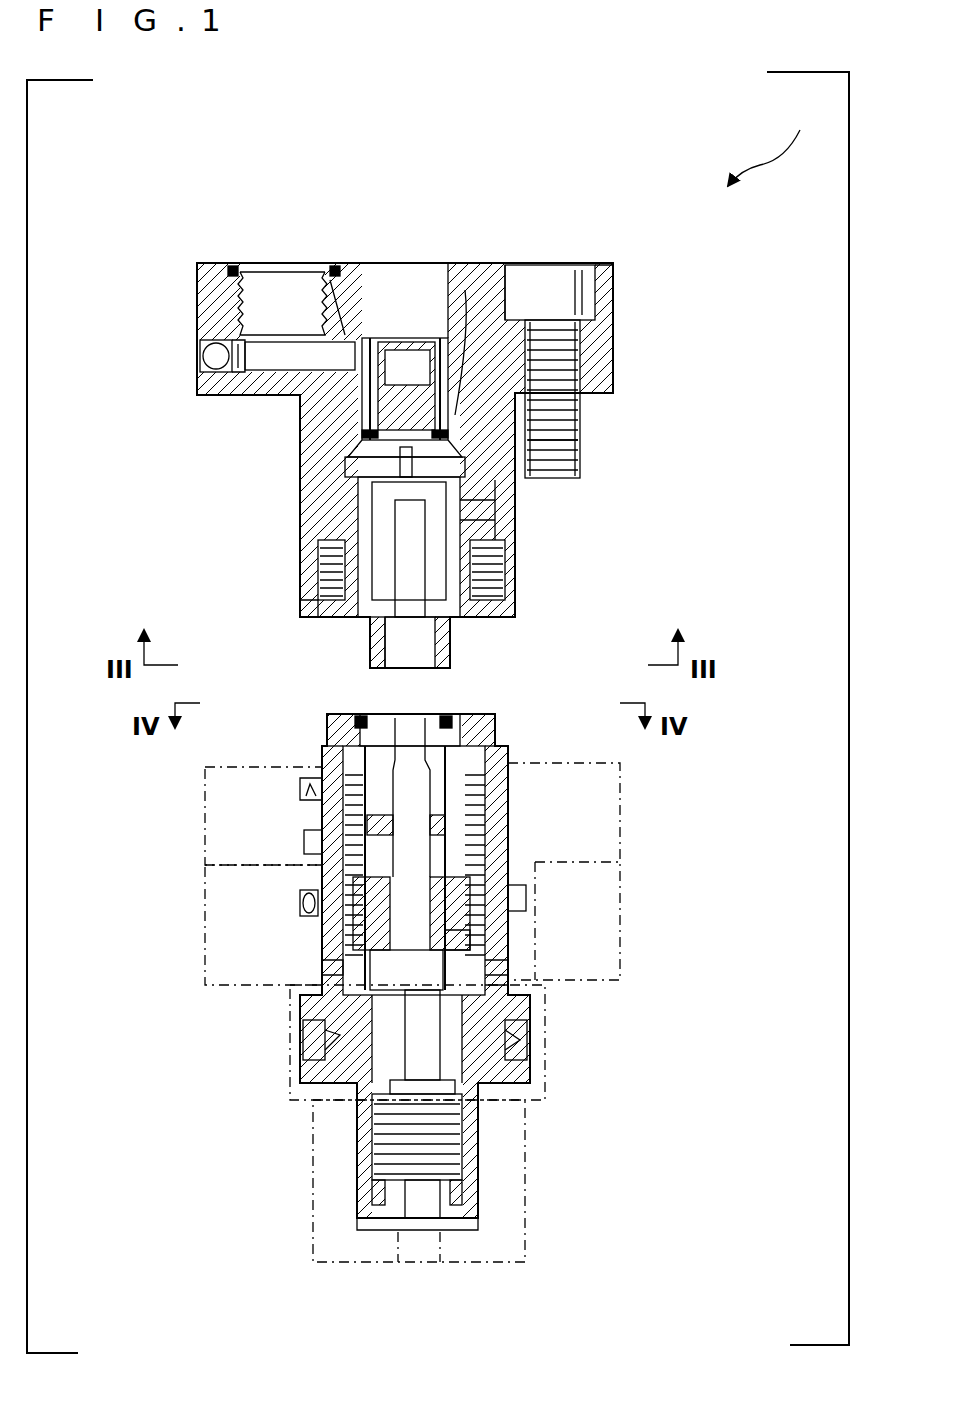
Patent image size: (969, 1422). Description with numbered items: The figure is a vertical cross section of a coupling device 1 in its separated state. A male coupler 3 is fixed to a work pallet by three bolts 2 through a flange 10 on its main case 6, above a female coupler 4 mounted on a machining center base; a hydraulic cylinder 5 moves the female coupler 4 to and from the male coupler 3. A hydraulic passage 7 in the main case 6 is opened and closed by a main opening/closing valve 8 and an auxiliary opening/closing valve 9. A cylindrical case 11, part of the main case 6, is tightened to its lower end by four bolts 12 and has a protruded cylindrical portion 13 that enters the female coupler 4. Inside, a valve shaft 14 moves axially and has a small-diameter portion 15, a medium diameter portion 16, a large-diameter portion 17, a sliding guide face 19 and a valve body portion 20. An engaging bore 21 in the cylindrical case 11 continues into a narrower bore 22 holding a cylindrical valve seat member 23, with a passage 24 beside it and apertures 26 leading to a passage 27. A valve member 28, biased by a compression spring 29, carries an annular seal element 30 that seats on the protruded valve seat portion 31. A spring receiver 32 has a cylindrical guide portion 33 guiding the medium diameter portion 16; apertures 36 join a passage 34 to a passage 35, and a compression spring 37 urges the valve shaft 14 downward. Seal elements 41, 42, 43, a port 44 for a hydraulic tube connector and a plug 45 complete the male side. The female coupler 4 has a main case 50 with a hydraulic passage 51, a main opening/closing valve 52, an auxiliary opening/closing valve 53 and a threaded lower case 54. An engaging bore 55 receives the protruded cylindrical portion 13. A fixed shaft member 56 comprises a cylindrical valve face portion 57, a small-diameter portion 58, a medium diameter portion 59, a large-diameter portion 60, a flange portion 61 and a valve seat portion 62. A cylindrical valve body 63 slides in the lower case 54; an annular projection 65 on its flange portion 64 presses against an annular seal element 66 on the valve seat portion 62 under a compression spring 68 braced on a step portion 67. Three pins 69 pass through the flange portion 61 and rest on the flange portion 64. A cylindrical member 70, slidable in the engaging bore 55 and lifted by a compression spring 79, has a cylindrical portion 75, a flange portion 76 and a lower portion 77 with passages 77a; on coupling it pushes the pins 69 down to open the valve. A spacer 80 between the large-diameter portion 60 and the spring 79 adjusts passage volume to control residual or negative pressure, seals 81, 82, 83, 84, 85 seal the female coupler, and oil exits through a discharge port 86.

The coupling device 1 is at (779, 138).
The bolts 2 is at (582, 420).
The male coupler 3 is at (642, 288).
The female coupler 4 is at (548, 712).
The hydraulic cylinder 5 is at (302, 1242).
The main case 6 is at (190, 285).
The hydraulic passage 7 is at (360, 462).
The main opening/closing valve 8 is at (372, 345).
The auxiliary opening/closing valve 9 is at (372, 676).
The flange 10 is at (615, 370).
The cylindrical case 11 is at (360, 620).
The bolts 12 is at (308, 598).
The protruded cylindrical portion 13 is at (372, 650).
The valve shaft 14 is at (410, 642).
The small-diameter portion 15 is at (505, 500).
The medium diameter portion 16 is at (500, 535).
The large-diameter portion 17 is at (520, 580).
The sliding guide face 19 is at (505, 612).
The valve body portion 20 is at (455, 645).
The engaging bore 21 is at (360, 505).
The bore 22 is at (305, 358).
The valve seat member 23 is at (512, 330).
The passage 24 is at (452, 290).
The apertures 26 is at (498, 290).
The passage 27 is at (338, 330).
The valve member 28 is at (400, 335).
The compression spring 29 is at (395, 345).
The annular seal element 30 is at (590, 336).
The protruded valve seat portion 31 is at (355, 432).
The spring receiver 32 is at (545, 475).
The cylindrical guide portion 33 is at (500, 522).
The passage 34 is at (505, 560).
The passage 35 is at (550, 448).
The apertures 36 is at (355, 476).
The compression spring 37 is at (318, 547).
The seal element 41 is at (205, 376).
The seal element 42 is at (320, 575).
The seal element 43 is at (232, 268).
The port 44 is at (282, 303).
The plug 45 is at (200, 352).
The main case 50 is at (548, 866).
The hydraulic passage 51 is at (302, 872).
The main opening/closing valve 52 is at (378, 1102).
The auxiliary opening/closing valve 53 is at (458, 704).
The lower case 54 is at (480, 1130).
The engaging bore 55 is at (360, 758).
The shaft member 56 is at (411, 933).
The cylindrical valve face portion 57 is at (350, 722).
The small-diameter portion 58 is at (470, 765).
The medium diameter portion 59 is at (515, 812).
The large-diameter portion 60 is at (520, 922).
The flange portion 61 is at (492, 946).
The valve seat portion 62 is at (335, 988).
The cylindrical valve body 63 is at (530, 1030).
The flange portion 64 is at (505, 968).
The annular projection 65 is at (340, 1032).
The annular seal element 66 is at (350, 955).
The step portion 67 is at (345, 1095).
The compression spring 68 is at (525, 1060).
The pins 69 is at (520, 893).
The cylindrical member 70 is at (325, 752).
The cylindrical portion 75 is at (452, 720).
The flange portion 76 is at (305, 785).
The cylindrical member lower portion 77 is at (320, 845).
The passages 77a is at (315, 822).
The compression spring 79 is at (300, 910).
The spacer 80 is at (348, 925).
The seal 81 is at (520, 782).
The seal 82 is at (520, 998).
The seal 83 is at (525, 1058).
The seal 84 is at (462, 1105).
The seal 85 is at (478, 1195).
The hydraulic oil discharge port 86 is at (415, 1200).